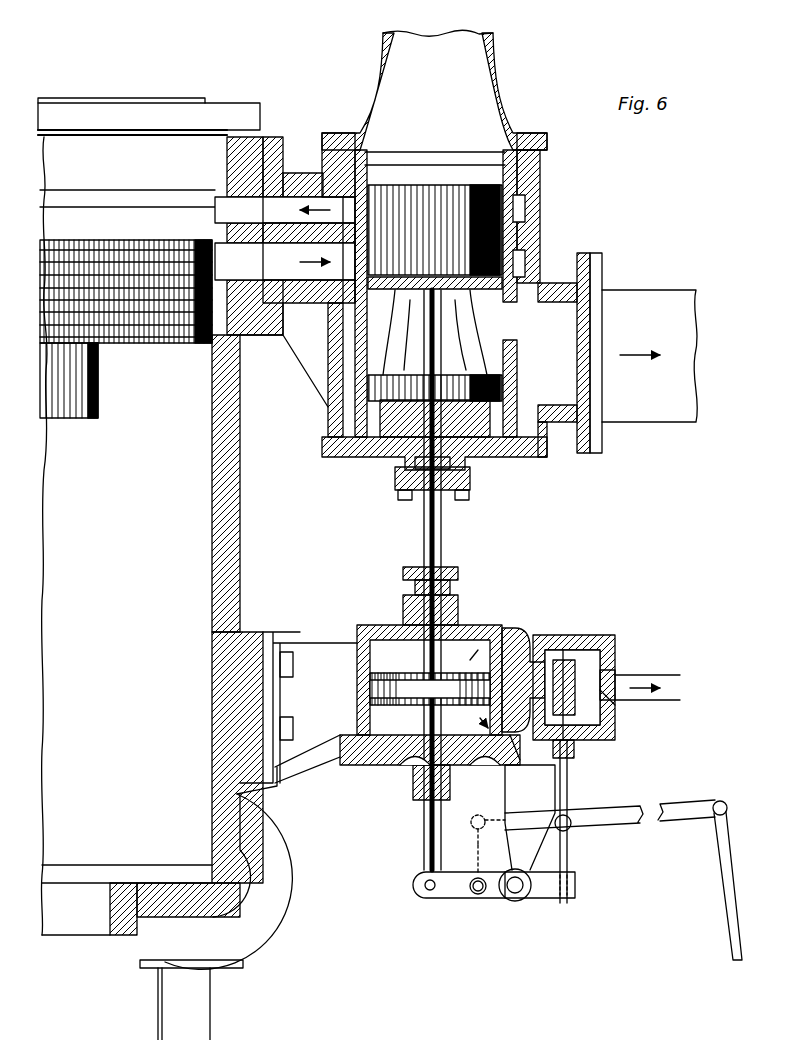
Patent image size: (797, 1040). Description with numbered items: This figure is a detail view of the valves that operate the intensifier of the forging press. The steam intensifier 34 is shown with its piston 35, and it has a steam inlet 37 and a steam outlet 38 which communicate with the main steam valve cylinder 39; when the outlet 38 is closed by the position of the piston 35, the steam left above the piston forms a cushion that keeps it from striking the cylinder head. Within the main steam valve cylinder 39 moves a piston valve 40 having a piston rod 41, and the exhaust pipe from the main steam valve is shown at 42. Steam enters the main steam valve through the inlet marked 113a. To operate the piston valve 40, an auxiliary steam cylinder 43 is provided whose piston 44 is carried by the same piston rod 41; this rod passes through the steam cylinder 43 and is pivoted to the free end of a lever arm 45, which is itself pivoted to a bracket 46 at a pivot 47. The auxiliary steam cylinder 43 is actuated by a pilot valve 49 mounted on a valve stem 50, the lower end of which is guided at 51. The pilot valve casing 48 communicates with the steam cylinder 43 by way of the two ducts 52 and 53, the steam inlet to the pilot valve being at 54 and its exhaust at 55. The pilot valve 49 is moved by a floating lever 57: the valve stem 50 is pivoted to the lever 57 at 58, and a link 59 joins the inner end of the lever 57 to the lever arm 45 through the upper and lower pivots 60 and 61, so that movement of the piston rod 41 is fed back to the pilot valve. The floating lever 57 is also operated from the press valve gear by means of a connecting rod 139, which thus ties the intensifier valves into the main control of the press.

The inlet pipe 113a is at (437, 105).
The steam intensifier 34 is at (183, 516).
The piston 35 is at (120, 310).
The steam inlet 37 is at (285, 210).
The steam outlet 38 is at (285, 261).
The main steam valve cylinder 39 is at (535, 217).
The piston valve 40 is at (435, 293).
The piston rod 41 is at (428, 527).
The exhaust pipe 42 is at (617, 353).
The auxiliary steam cylinder 43 is at (358, 663).
The piston 44 is at (433, 680).
The lever arm 45 is at (459, 885).
The bracket 46 is at (512, 817).
The pivot 47 is at (515, 900).
The pilot valve casing 48 is at (608, 642).
The pilot valve 49 is at (565, 658).
The valve stem 50 is at (568, 782).
The guide 51 is at (576, 893).
The duct 52 is at (515, 645).
The duct 53 is at (530, 754).
The steam inlet 54 is at (620, 678).
The exhaust 55 is at (615, 705).
The floating lever 57 is at (660, 808).
The pivot 58 is at (558, 816).
The link 59 is at (478, 850).
The upper pivot 60 is at (470, 822).
The lower pivot 61 is at (478, 893).
The connecting rod 139 is at (738, 905).